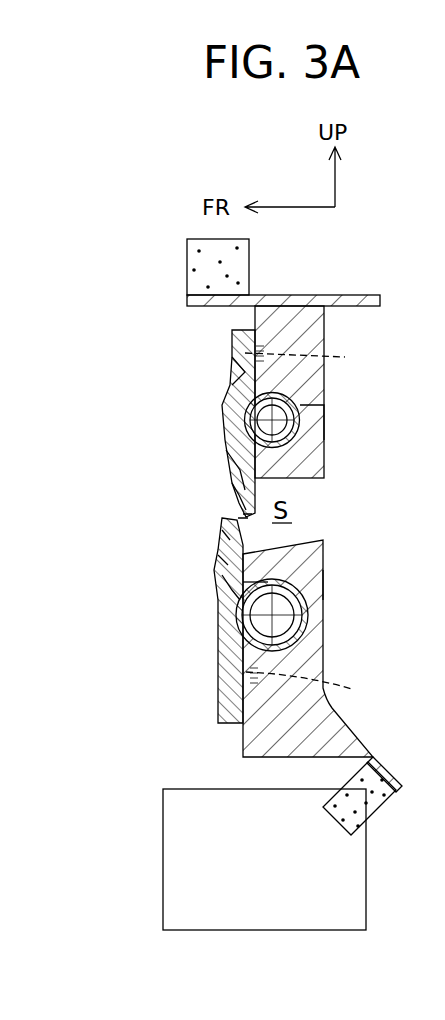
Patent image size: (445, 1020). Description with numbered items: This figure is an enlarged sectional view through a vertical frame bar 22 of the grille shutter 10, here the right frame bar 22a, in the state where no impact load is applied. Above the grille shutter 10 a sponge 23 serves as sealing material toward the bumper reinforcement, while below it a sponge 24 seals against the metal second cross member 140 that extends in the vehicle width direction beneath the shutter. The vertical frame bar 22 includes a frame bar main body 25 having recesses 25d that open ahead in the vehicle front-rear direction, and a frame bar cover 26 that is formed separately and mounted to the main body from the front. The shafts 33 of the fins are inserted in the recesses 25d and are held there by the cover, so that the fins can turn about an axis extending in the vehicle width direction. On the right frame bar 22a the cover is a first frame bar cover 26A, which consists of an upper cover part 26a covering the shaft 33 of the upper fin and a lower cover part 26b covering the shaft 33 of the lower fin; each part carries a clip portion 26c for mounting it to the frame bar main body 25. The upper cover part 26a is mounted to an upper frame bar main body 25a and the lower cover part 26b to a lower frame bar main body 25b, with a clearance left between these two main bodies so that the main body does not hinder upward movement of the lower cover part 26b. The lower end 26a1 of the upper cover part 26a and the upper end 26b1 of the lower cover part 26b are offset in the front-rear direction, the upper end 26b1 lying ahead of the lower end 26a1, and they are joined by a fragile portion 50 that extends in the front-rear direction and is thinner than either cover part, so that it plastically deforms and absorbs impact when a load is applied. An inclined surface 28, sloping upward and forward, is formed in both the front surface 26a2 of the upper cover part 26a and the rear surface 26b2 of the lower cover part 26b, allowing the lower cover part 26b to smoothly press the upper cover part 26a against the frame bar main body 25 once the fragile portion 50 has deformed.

The grille shutter 10 is at (364, 279).
The sponge 23 is at (230, 264).
The sponge 24 is at (377, 800).
The frame bar main body 25 is at (308, 333).
The upper frame bar main body 25a is at (313, 417).
The lower frame bar main body 25b is at (324, 588).
The recess 25d is at (290, 413).
The frame bar cover 26 is at (182, 526).
The first frame bar cover 26A is at (232, 335).
The upper cover part 26a is at (235, 392).
The lower end of the upper cover part 26a1 is at (240, 498).
The front surface of the upper cover part 26a2 is at (230, 483).
The lower cover part 26b is at (226, 668).
The upper end of the lower cover part 26b1 is at (226, 536).
The rear surface of the lower cover part 26b2 is at (224, 560).
The clip portion 26c is at (321, 523).
The inclined surface 28 is at (230, 472).
The shaft 33 is at (295, 438).
The fragile portion 50 is at (244, 515).
The vertical frame bar 22 is at (341, 646).
The right frame bar 22a is at (324, 553).
The second cross member 140 is at (175, 828).